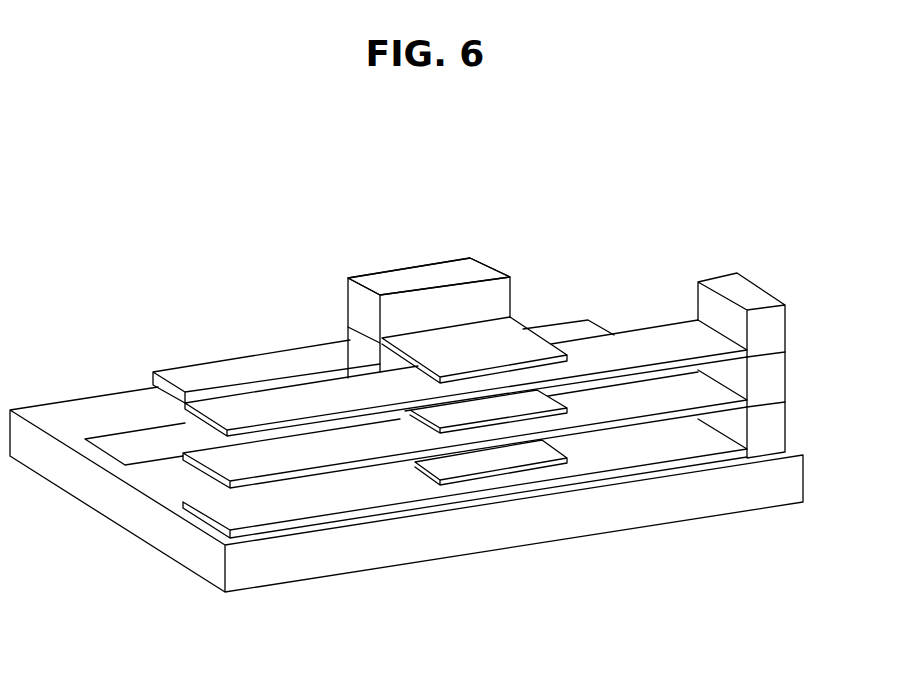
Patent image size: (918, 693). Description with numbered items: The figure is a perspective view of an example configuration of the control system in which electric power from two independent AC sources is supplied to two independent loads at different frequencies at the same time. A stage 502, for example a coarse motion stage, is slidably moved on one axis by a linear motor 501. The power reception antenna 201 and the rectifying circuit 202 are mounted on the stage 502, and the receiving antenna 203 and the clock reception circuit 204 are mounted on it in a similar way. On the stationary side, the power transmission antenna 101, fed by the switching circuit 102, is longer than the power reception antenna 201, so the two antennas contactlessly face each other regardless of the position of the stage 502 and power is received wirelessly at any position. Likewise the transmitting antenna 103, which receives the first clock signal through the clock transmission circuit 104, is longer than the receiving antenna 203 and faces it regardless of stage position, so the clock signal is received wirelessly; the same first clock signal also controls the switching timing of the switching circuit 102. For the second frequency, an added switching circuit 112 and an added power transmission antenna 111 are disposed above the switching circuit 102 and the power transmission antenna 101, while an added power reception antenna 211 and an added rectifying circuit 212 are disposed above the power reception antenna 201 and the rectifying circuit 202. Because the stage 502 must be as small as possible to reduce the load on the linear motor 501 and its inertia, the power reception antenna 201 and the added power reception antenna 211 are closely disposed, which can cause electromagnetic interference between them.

The power transmission antenna 101 is at (620, 412).
The switching circuit 102 is at (778, 382).
The transmitting antenna 103 is at (357, 498).
The clock transmission circuit 104 is at (773, 433).
The added power transmission antenna 111 is at (655, 345).
The added switching circuit 112 is at (742, 287).
The power reception antenna 201 is at (530, 400).
The rectifying circuit 202 is at (363, 350).
The receiving antenna 203 is at (485, 462).
The clock reception circuit 204 is at (353, 418).
The added power reception antenna 211 is at (468, 340).
The added rectifying circuit 212 is at (432, 303).
The linear motor 501 is at (125, 445).
The stage 502 is at (240, 385).